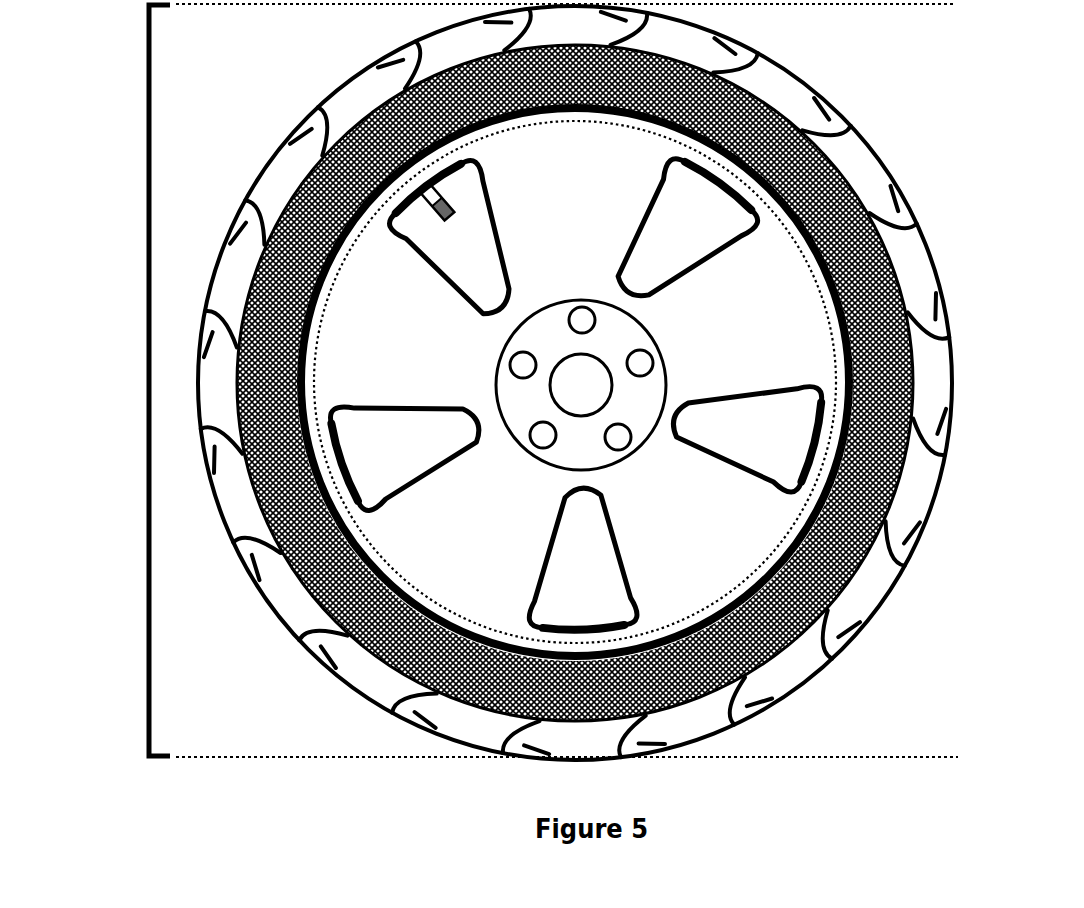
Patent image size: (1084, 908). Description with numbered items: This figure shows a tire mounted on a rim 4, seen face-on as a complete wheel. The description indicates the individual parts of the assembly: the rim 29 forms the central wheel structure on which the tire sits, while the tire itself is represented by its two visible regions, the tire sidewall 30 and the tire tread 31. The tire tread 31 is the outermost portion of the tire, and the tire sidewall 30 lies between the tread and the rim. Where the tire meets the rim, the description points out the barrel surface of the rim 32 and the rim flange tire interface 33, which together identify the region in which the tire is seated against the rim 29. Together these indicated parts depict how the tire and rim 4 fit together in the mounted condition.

The rim 4 is at (149, 382).
The rim 29 is at (575, 394).
The tire sidewall 30 is at (575, 383).
The tire tread 31 is at (790, 82).
The barrel surface of the rim 32 is at (822, 285).
The rim flange tire interface 33 is at (787, 577).